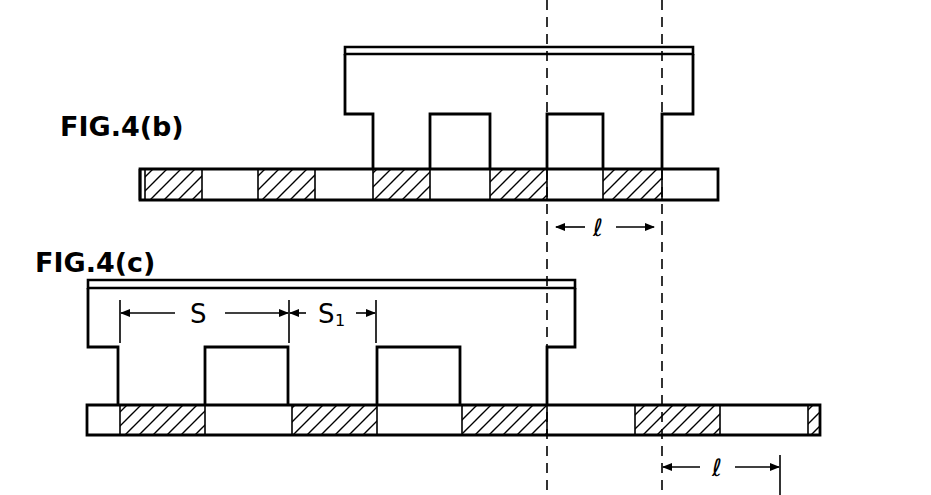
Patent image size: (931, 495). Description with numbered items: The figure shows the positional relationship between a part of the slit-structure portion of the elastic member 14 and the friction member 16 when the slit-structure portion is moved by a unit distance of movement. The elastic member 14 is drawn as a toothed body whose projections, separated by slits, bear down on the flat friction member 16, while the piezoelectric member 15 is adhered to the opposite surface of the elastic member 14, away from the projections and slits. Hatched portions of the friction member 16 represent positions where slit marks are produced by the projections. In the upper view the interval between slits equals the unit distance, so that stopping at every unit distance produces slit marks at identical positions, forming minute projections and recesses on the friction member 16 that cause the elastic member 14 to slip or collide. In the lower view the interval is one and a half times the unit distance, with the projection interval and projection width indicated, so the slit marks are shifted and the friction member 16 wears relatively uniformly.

In FIG. 4B, the elastic member 14 is at (356, 82).
In FIG. 4C, the elastic member 14 is at (92, 323).
In FIG. 4B, the piezoelectric member 15 is at (380, 46).
In FIG. 4C, the piezoelectric member 15 is at (462, 279).
In FIG. 4B, the friction member 16 is at (697, 168).
In FIG. 4C, the friction member 16 is at (796, 436).